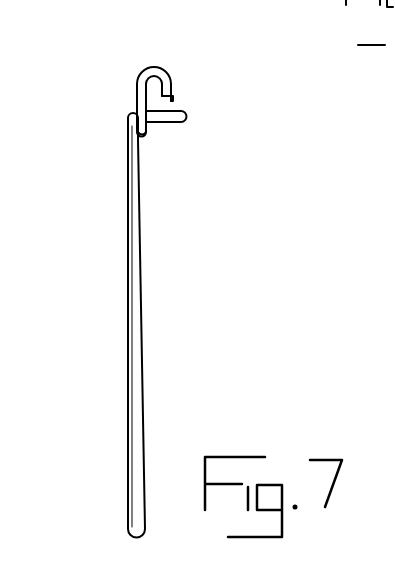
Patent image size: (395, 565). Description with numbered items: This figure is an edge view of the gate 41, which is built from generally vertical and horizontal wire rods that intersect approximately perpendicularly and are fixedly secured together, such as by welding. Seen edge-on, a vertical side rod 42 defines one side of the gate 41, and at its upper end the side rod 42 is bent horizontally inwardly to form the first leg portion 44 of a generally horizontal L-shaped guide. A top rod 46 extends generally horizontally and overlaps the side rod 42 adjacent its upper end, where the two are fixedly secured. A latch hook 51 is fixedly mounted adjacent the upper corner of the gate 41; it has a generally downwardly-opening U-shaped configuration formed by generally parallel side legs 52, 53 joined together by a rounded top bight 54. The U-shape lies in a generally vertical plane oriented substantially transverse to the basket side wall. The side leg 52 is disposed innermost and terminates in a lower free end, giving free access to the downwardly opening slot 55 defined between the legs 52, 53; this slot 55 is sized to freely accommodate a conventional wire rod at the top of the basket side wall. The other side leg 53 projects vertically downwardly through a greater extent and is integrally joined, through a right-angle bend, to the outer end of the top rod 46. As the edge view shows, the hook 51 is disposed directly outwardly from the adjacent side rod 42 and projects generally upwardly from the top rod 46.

The gate 41 is at (148, 269).
The vertical side rod 42 is at (137, 243).
The first leg portion 44 is at (186, 121).
The top rod 46 is at (148, 137).
The latch hook 51 is at (161, 68).
The side leg 52 is at (172, 78).
The side leg 53 is at (138, 97).
The rounded top bight 54 is at (148, 68).
The slot 55 is at (172, 99).